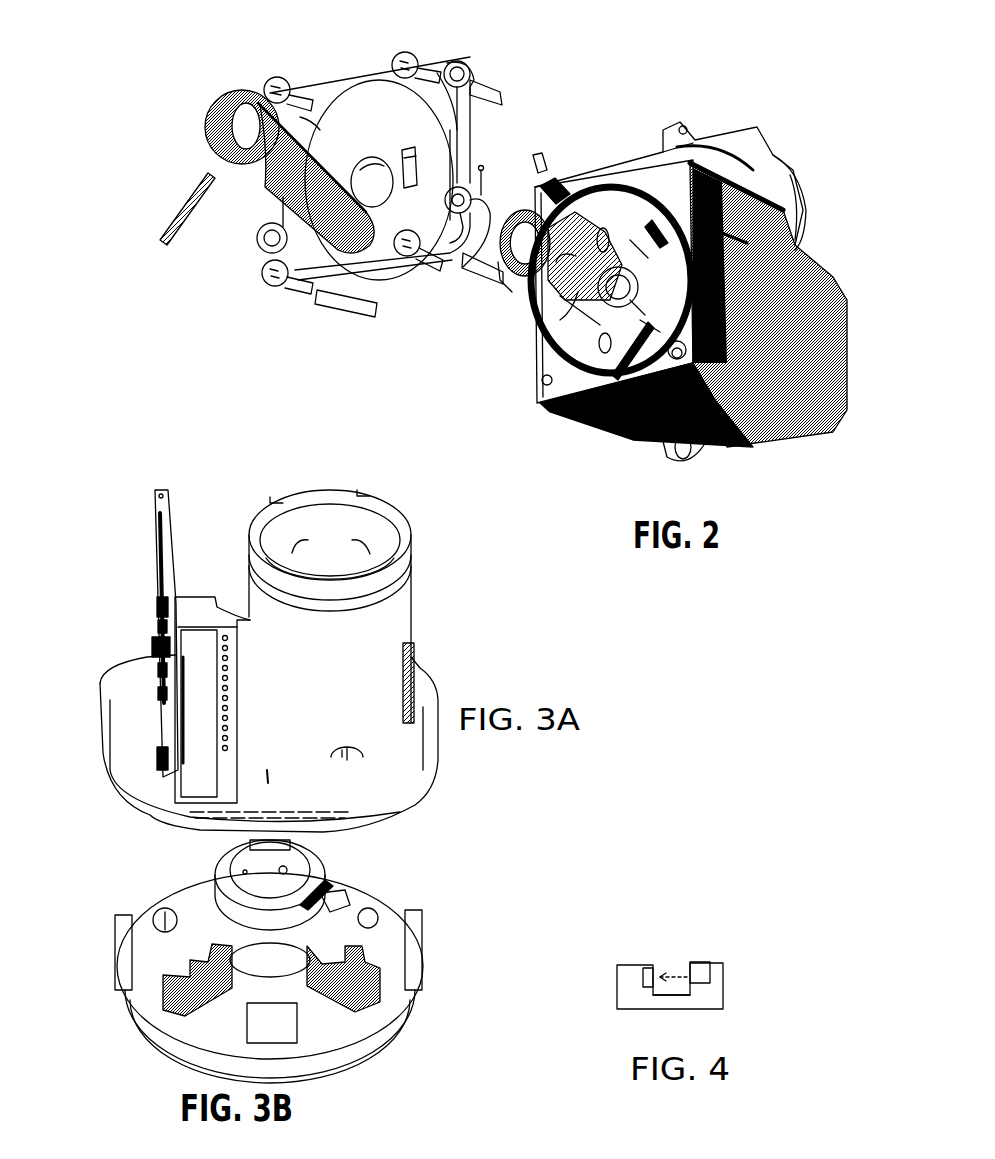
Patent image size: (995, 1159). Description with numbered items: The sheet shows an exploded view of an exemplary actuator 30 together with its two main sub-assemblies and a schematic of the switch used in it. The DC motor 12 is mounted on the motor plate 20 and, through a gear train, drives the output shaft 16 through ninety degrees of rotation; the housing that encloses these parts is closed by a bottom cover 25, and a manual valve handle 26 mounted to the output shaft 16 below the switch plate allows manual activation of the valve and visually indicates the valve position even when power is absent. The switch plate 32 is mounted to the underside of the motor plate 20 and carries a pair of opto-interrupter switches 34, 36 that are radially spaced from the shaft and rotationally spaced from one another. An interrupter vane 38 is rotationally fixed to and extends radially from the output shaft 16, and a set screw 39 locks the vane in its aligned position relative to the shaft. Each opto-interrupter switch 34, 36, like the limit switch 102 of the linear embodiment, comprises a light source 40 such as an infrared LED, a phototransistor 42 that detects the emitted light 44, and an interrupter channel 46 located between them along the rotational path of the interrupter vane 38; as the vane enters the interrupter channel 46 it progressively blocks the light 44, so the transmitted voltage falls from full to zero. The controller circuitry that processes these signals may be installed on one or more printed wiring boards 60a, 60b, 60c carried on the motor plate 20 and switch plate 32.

In FIG. 3A, the DC motor 12 is at (333, 517).
In FIG. 2, the output shaft 16 is at (578, 230).
In FIG. 3A, the motor plate 20 is at (413, 727).
In FIG. 2, the bottom cover 25 is at (366, 105).
In FIG. 2, the manual valve handle 26 is at (205, 113).
In FIG. 2, the actuator 30 is at (720, 73).
In FIG. 2, the switch plate 32 is at (572, 323).
In FIG. 3B, the switch plate 32 is at (383, 912).
In FIG. 2, the opto-interrupter switch 34 is at (655, 237).
In FIG. 3B, the opto-interrupter switch 34 is at (377, 993).
In FIG. 4, the opto-interrupter switch 34 is at (724, 970).
In FIG. 2, the opto-interrupter switch 36 is at (647, 317).
In FIG. 3B, the opto-interrupter switch 36 is at (167, 1000).
In FIG. 4, the opto-interrupter switch 36 is at (724, 970).
In FIG. 2, the interrupter vane 38 is at (580, 190).
In FIG. 3B, the interrupter vane 38 is at (333, 897).
In FIG. 2, the set screw 39 is at (535, 152).
In FIG. 4, the light source 40 is at (697, 967).
In FIG. 4, the phototransistor 42 is at (640, 970).
In FIG. 4, the emitted light 44 is at (675, 970).
In FIG. 4, the interrupter channel 46 is at (660, 990).
In FIG. 3A, the printed wiring board 60a is at (147, 503).
In FIG. 3A, the printed wiring board 60b is at (337, 680).
In FIG. 3B, the printed wiring board 60c is at (193, 902).
In FIG. 4, the opto-interrupter limit switch 102 is at (723, 990).